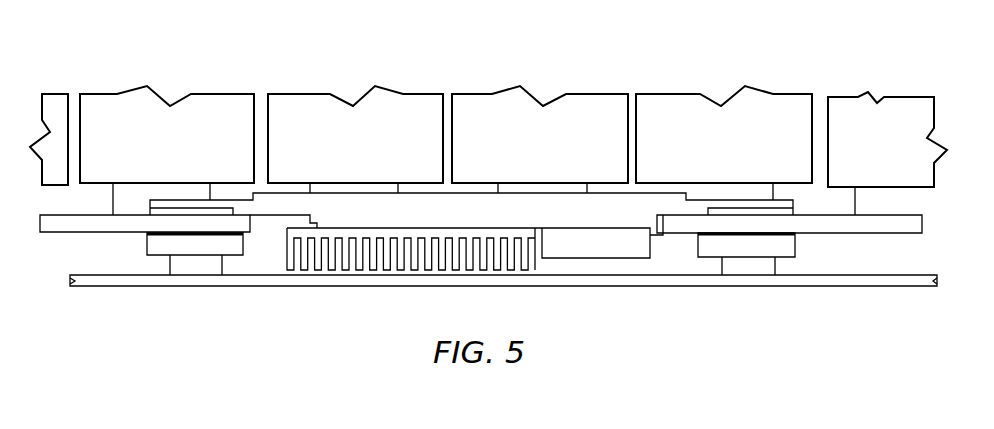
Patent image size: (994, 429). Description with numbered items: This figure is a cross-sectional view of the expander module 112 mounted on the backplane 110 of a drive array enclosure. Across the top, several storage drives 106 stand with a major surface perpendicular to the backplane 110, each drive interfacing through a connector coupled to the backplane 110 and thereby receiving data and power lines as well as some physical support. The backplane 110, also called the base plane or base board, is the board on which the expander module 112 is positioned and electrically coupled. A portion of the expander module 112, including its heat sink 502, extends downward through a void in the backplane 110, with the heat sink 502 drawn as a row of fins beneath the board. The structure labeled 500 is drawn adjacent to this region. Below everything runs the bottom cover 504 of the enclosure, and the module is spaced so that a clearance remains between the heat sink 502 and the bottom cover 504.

The storage drives 106 is at (278, 112).
The backplane 110 is at (55, 233).
The expander module 112 is at (582, 233).
The interposer connector 500 is at (262, 229).
The heat sink 502 is at (330, 255).
The bottom cover 504 is at (145, 287).